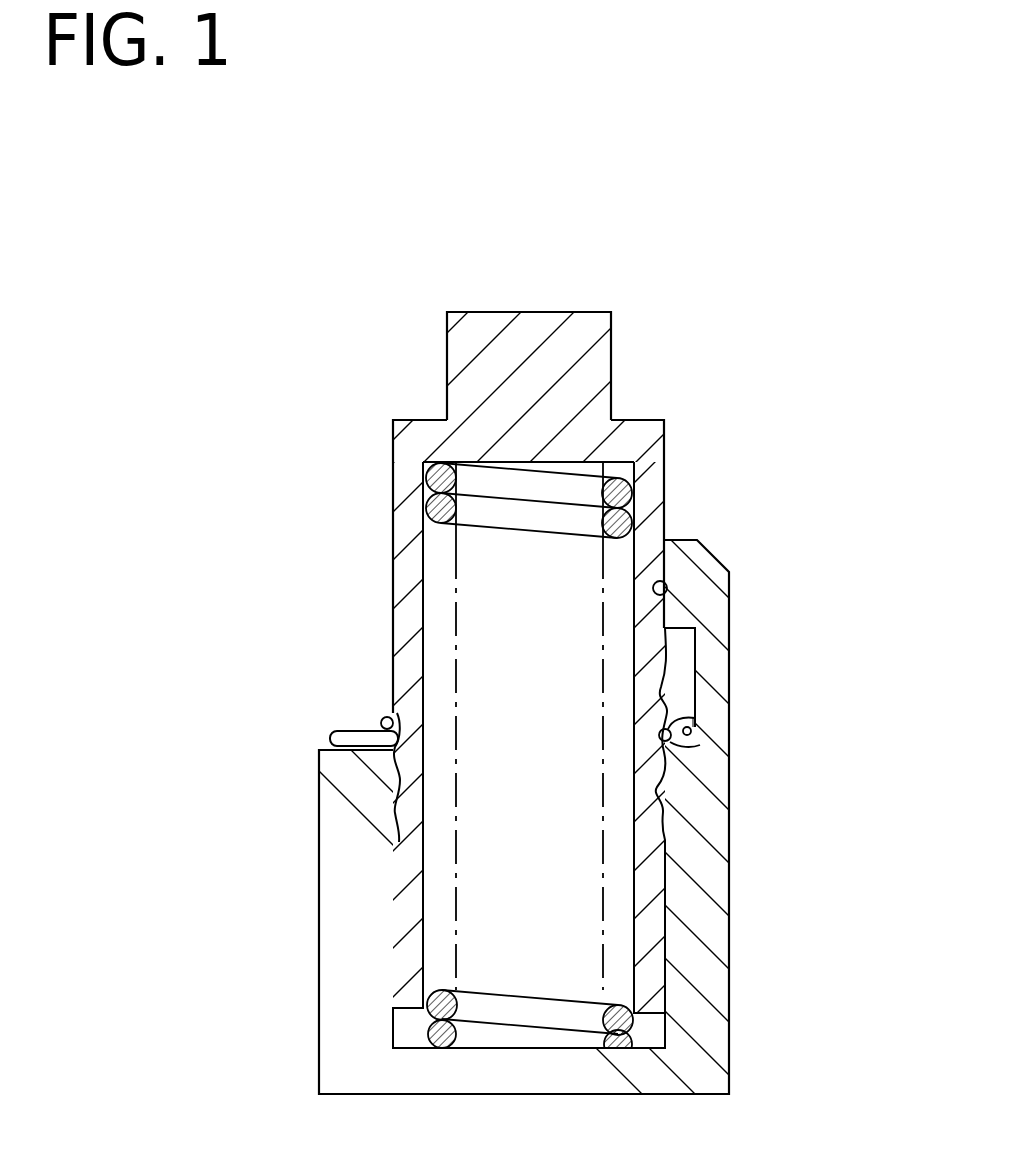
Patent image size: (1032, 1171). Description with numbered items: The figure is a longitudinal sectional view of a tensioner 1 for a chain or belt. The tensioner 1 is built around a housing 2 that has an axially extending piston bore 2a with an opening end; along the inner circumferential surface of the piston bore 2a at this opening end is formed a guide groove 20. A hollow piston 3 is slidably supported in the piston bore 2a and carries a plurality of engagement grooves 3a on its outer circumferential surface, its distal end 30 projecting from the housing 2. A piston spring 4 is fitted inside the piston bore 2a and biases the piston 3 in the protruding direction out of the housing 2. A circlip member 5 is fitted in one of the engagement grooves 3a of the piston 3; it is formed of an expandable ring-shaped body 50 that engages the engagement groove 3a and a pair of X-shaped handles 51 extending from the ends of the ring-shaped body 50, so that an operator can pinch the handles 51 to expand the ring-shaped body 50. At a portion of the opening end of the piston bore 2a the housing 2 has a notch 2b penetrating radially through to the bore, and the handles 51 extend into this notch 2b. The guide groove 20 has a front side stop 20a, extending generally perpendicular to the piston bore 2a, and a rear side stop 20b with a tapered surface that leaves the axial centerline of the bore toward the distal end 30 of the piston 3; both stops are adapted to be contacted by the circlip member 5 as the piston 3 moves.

The tensioner 1 is at (665, 205).
The housing 2 is at (731, 845).
The piston bore 2a is at (668, 588).
The notch 2b is at (325, 750).
The hollow piston 3 is at (516, 585).
The engagement groove 3a is at (395, 782).
The piston spring 4 is at (405, 1030).
The circlip member 5 is at (615, 672).
The guide groove 20 is at (763, 701).
The front side stop 20a is at (677, 632).
The rear side stop 20b is at (670, 742).
The distal end 30 is at (597, 352).
The ring-shaped body 50 is at (693, 717).
The handles 51 is at (362, 728).